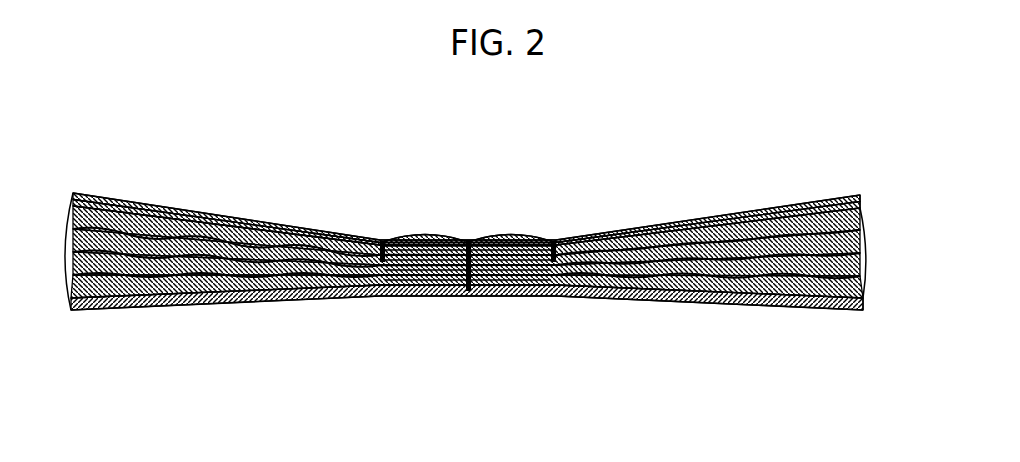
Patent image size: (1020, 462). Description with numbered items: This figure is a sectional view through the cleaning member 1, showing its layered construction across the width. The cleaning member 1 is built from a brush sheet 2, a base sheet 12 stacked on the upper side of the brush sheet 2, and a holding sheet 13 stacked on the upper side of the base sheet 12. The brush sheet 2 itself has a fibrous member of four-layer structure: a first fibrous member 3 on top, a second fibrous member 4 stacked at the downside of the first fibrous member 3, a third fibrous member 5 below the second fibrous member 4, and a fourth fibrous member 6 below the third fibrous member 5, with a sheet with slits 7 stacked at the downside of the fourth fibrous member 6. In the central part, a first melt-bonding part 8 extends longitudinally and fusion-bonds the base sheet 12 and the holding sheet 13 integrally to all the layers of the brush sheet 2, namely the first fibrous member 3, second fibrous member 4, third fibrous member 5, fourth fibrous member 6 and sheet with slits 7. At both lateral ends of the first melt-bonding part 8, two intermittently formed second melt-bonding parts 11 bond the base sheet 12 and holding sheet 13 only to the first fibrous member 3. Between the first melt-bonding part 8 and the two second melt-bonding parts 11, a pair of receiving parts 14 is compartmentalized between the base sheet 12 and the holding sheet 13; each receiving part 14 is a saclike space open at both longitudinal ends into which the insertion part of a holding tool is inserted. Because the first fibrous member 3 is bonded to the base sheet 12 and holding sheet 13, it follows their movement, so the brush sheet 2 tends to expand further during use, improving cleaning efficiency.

The cleaning member 1 is at (678, 151).
The brush sheet 2 is at (890, 192).
The first fibrous member 3 is at (852, 217).
The second fibrous member 4 is at (857, 235).
The third fibrous member 5 is at (858, 260).
The fourth fibrous member 6 is at (858, 277).
The sheet with slits 7 is at (857, 300).
The first melt-bonding part 8 is at (460, 231).
The second melt-bonding part 11 is at (374, 232).
The base sheet 12 is at (853, 197).
The holding sheet 13 is at (830, 187).
The receiving part 14 is at (410, 228).